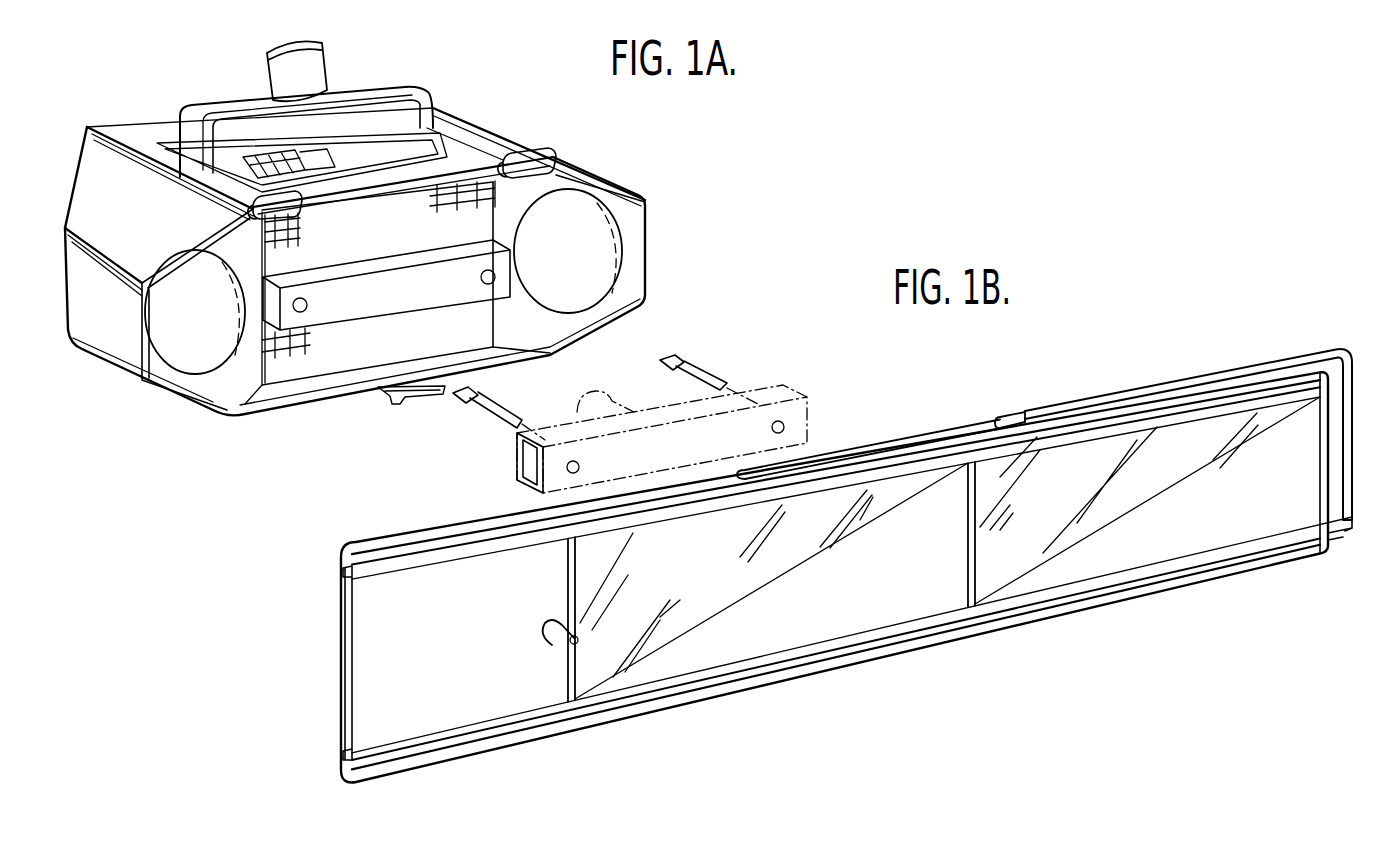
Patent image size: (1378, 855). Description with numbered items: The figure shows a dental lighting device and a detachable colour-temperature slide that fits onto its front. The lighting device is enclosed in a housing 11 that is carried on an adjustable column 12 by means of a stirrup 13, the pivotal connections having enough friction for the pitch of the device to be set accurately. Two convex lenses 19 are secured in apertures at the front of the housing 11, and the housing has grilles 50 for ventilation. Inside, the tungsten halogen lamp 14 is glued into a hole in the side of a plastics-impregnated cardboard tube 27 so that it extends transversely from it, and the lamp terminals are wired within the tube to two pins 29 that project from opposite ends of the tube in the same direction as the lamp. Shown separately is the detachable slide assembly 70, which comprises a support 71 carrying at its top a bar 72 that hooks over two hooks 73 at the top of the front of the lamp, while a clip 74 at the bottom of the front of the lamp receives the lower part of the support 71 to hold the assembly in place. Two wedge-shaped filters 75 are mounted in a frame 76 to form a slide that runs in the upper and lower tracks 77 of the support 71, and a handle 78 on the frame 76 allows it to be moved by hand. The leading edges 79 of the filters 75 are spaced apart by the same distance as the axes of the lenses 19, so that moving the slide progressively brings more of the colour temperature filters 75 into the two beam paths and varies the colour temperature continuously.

In FIG. 1A, the housing 11 is at (480, 128).
In FIG. 1A, the adjustable column 12 is at (313, 70).
In FIG. 1A, the stirrup 13 is at (390, 85).
In FIG. 1A, the tungsten halogen lamp 14 is at (598, 392).
In FIG. 1A, the convex lens 19 is at (580, 205).
In FIG. 1A, the plastics-impregnated cardboard tube 27 is at (398, 302).
In FIG. 1A, the pin 29 is at (493, 410).
In FIG. 1A, the ventilation grille 50 is at (313, 156).
In FIG. 1B, the detachable slide assembly 70 is at (1047, 404).
In FIG. 1B, the support 71 is at (1130, 390).
In FIG. 1B, the bar 72 is at (850, 447).
In FIG. 1A, the hook 73 is at (280, 208).
In FIG. 1A, the clip 74 is at (393, 393).
In FIG. 1B, the wedge-shaped filter 75 is at (785, 562).
In FIG. 1B, the frame 76 is at (568, 558).
In FIG. 1B, the track 77 is at (393, 567).
In FIG. 1B, the handle 78 is at (557, 640).
In FIG. 1B, the leading edge 79 is at (900, 503).